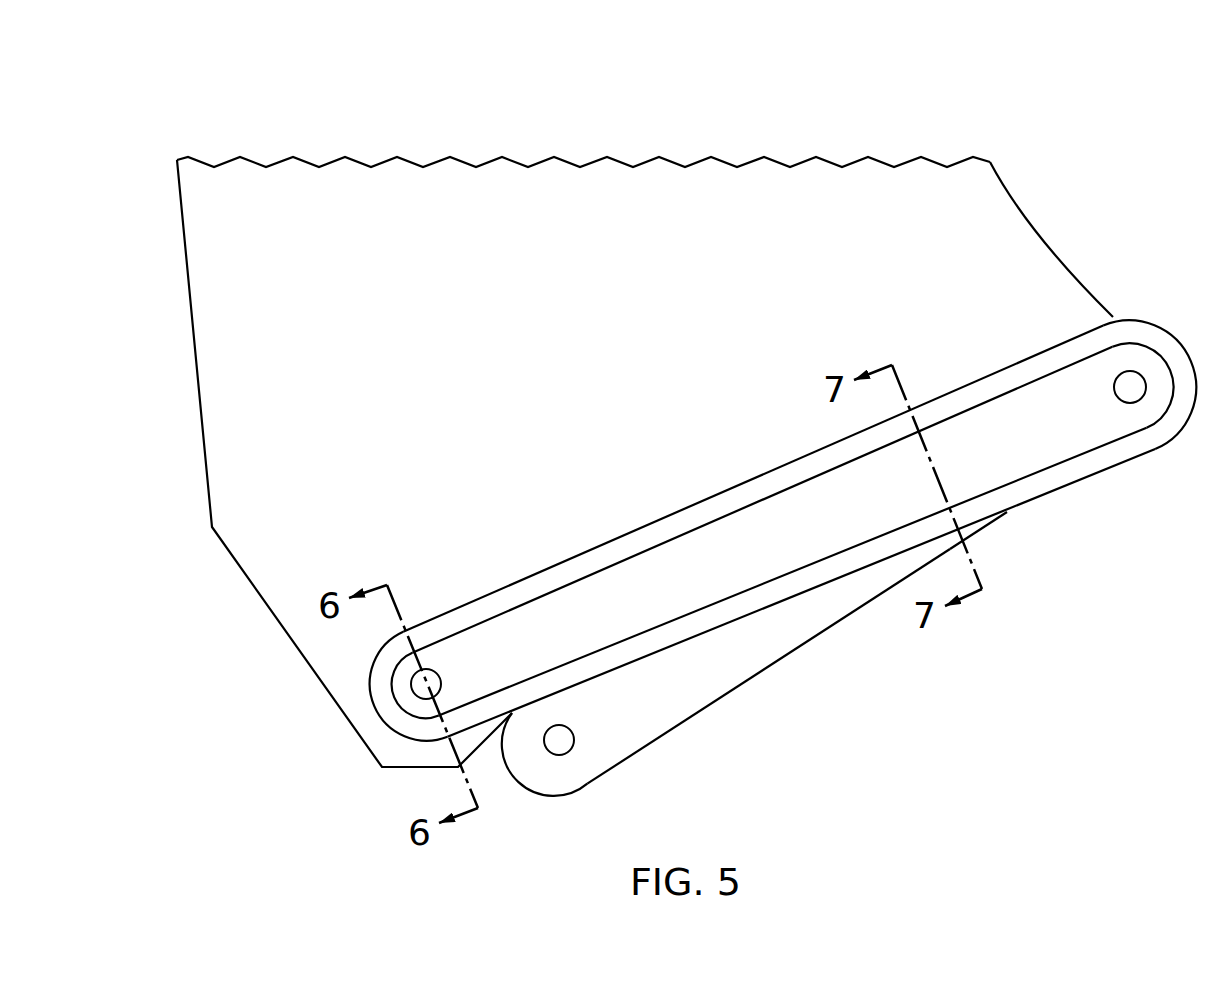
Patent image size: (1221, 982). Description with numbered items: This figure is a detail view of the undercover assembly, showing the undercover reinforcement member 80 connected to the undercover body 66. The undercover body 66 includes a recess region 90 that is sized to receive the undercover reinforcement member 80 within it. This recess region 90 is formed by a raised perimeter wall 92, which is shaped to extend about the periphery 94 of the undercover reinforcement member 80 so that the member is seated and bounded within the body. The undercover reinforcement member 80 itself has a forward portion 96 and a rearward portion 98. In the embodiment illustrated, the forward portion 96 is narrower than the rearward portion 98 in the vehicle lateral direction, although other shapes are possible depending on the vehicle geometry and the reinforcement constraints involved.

The undercover body 66 is at (638, 403).
The undercover reinforcement member 80 is at (779, 482).
The recess region 90 is at (726, 672).
The raised perimeter wall 92 is at (1004, 496).
The periphery 94 is at (1088, 441).
The forward portion 96 is at (440, 601).
The rearward portion 98 is at (779, 490).